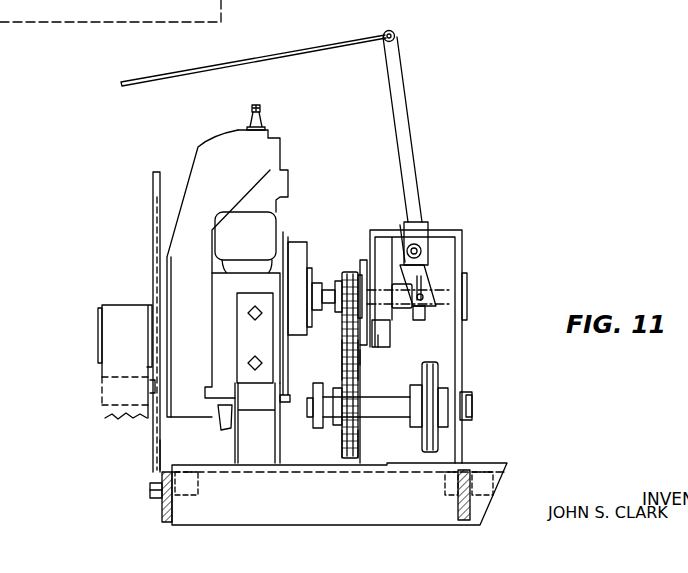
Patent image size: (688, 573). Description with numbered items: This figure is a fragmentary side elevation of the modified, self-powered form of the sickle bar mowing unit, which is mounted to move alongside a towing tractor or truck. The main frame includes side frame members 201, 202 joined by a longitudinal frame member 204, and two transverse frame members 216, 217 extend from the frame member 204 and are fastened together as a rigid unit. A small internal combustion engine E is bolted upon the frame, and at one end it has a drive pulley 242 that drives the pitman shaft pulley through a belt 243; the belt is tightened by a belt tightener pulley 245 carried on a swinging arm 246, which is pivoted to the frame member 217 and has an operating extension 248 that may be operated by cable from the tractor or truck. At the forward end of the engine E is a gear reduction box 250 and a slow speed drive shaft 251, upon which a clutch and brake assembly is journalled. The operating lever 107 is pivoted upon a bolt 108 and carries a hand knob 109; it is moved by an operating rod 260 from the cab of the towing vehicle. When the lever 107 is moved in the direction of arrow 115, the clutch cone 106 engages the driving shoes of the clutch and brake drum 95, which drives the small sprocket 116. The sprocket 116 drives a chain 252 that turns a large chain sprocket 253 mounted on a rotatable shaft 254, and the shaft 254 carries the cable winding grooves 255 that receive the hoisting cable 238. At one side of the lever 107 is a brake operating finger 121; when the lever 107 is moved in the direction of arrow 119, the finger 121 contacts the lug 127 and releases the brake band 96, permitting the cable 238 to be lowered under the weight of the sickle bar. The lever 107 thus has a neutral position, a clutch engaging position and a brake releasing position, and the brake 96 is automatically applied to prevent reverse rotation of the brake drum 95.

The operating rod 260 is at (258, 56).
The operating lever 107 is at (408, 160).
The arrow 119 is at (370, 14).
The arrow 115 is at (418, 19).
The bolt 108 is at (421, 252).
The hand knob 109 is at (424, 297).
The clutch cone 106 is at (404, 311).
The brake operating finger 121 is at (401, 228).
The lug 127 is at (363, 262).
The sprocket 116 is at (346, 277).
The drive chain 252 is at (344, 357).
The large chain sprocket 253 is at (350, 459).
The rotatable shaft 254 is at (371, 407).
The cable winding grooves 255 is at (437, 363).
The hoisting cable 238 is at (433, 365).
The gear reduction box 250 is at (296, 246).
The slow speed drive shaft 251 is at (326, 268).
The operating extension 248 is at (153, 198).
The swinging arm 246 is at (158, 447).
The drive pulley 242 is at (98, 318).
The belt 243 is at (122, 338).
The belt tightener pulley 245 is at (100, 397).
The brake band 96 is at (377, 347).
The brake drum 95 is at (362, 352).
The transverse frame member 217 is at (162, 517).
The transverse frame member 216 is at (470, 510).
The side frame member 201 is at (200, 485).
The side frame member 202 is at (443, 488).
The longitudinal frame member 204 is at (253, 510).
The internal combustion engine E is at (218, 305).